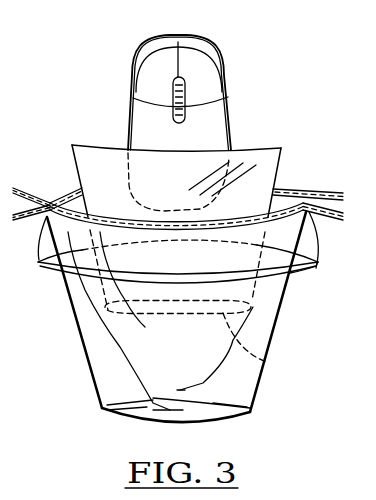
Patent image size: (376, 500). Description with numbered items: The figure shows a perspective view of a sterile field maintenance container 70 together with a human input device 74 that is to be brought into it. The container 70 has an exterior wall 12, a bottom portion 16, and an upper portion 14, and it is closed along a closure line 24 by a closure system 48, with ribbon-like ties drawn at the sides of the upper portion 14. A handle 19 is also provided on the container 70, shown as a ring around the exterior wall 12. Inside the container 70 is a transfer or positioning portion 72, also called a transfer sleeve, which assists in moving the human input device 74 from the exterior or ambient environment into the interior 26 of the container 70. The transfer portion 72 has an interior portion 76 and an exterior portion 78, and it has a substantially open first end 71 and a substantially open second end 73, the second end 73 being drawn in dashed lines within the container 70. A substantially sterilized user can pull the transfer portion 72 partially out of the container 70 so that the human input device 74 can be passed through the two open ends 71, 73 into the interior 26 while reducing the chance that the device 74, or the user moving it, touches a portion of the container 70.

The exterior wall 12 is at (278, 306).
The upper portion 14 is at (291, 188).
The bottom portion 16 is at (251, 414).
The handle 19 is at (39, 261).
The closure line 24 is at (292, 275).
The interior 26 is at (313, 226).
The closure system 48 is at (60, 184).
The sterile field maintenance container 70 is at (91, 402).
The first end 71 is at (243, 147).
The transfer portion 72 is at (273, 166).
The second end 73 is at (266, 361).
The human input device 74 is at (240, 77).
The interior portion 76 is at (112, 147).
The exterior portion 78 is at (73, 165).